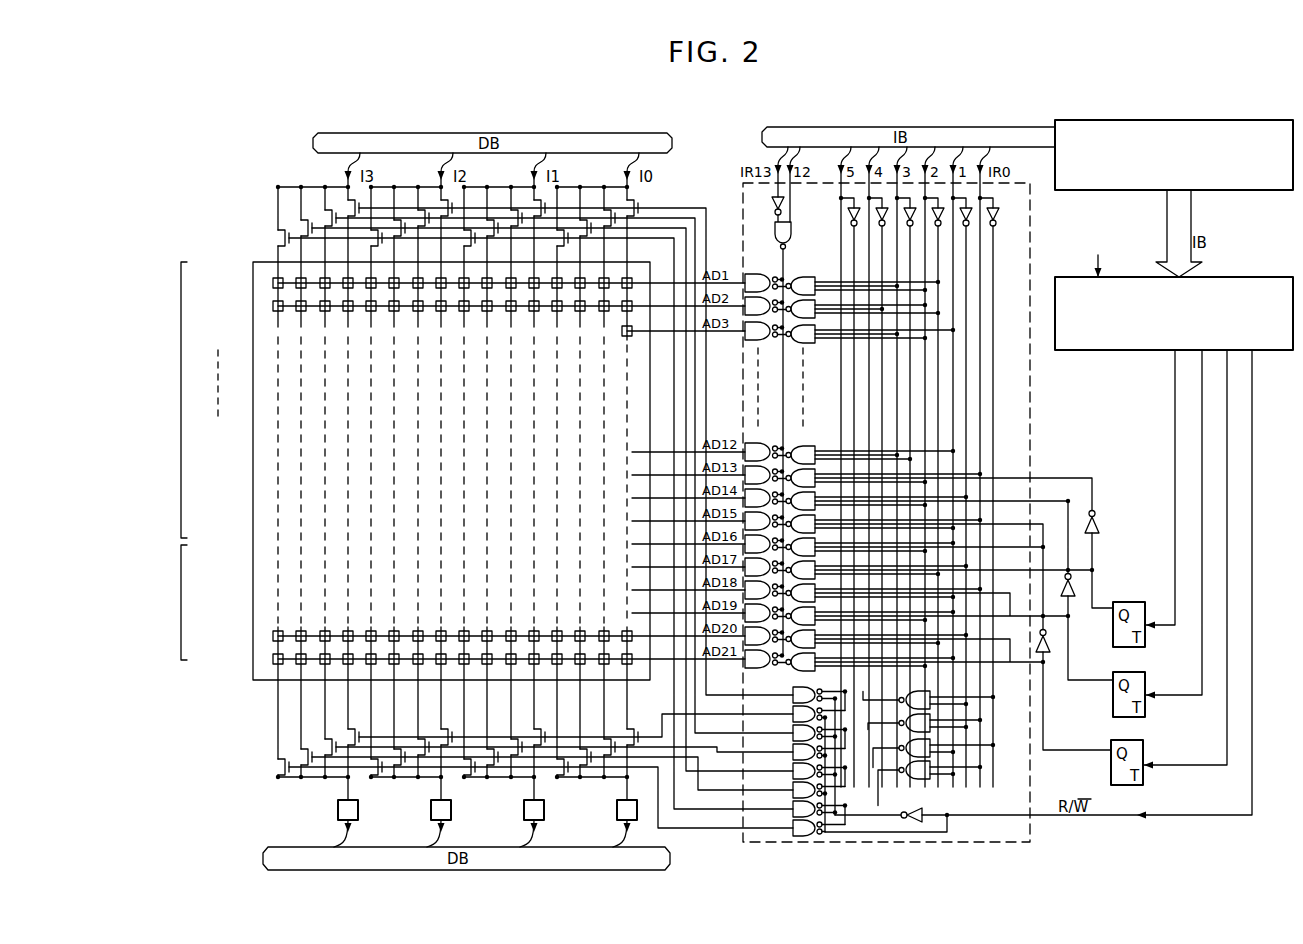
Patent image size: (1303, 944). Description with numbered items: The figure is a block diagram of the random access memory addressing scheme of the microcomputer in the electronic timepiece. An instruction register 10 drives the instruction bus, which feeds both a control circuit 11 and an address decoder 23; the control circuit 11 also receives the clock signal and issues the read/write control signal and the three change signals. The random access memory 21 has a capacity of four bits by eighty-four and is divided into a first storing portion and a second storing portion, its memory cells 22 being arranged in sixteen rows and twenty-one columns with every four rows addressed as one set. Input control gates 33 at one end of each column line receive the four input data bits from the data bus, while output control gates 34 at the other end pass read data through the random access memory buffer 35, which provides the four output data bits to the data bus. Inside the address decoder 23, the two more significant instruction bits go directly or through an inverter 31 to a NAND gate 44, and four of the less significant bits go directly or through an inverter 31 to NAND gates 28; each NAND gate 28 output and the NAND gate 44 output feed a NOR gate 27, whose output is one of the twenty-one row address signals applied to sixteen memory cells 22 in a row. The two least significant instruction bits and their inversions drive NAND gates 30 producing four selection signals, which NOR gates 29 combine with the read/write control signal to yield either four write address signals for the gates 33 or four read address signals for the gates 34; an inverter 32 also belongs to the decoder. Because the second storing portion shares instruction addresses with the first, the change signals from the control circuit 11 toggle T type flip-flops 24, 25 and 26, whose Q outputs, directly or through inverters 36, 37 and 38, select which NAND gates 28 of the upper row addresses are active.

The instruction register 10 is at (1240, 192).
The control circuit 11 is at (1140, 352).
The random access memory 21 is at (429, 486).
The memory cell 22 is at (276, 279).
The address decoder 23 is at (1048, 402).
The T type flip-flop 24 is at (1144, 786).
The T type flip-flop 25 is at (1146, 716).
The T type flip-flop 26 is at (1146, 646).
The NOR gate 27 is at (757, 275).
The NAND gate 28 is at (805, 277).
The NOR gate 29 is at (805, 837).
The NAND gate 30 is at (878, 806).
The inverter 31 is at (773, 203).
The inverter 32 is at (912, 834).
The gate 33 is at (285, 235).
The gate 34 is at (300, 756).
The random access memory buffer 35 is at (480, 823).
The inverter 36 is at (1050, 644).
The inverter 37 is at (1075, 585).
The inverter 38 is at (1098, 519).
The NAND gate 44 is at (792, 236).